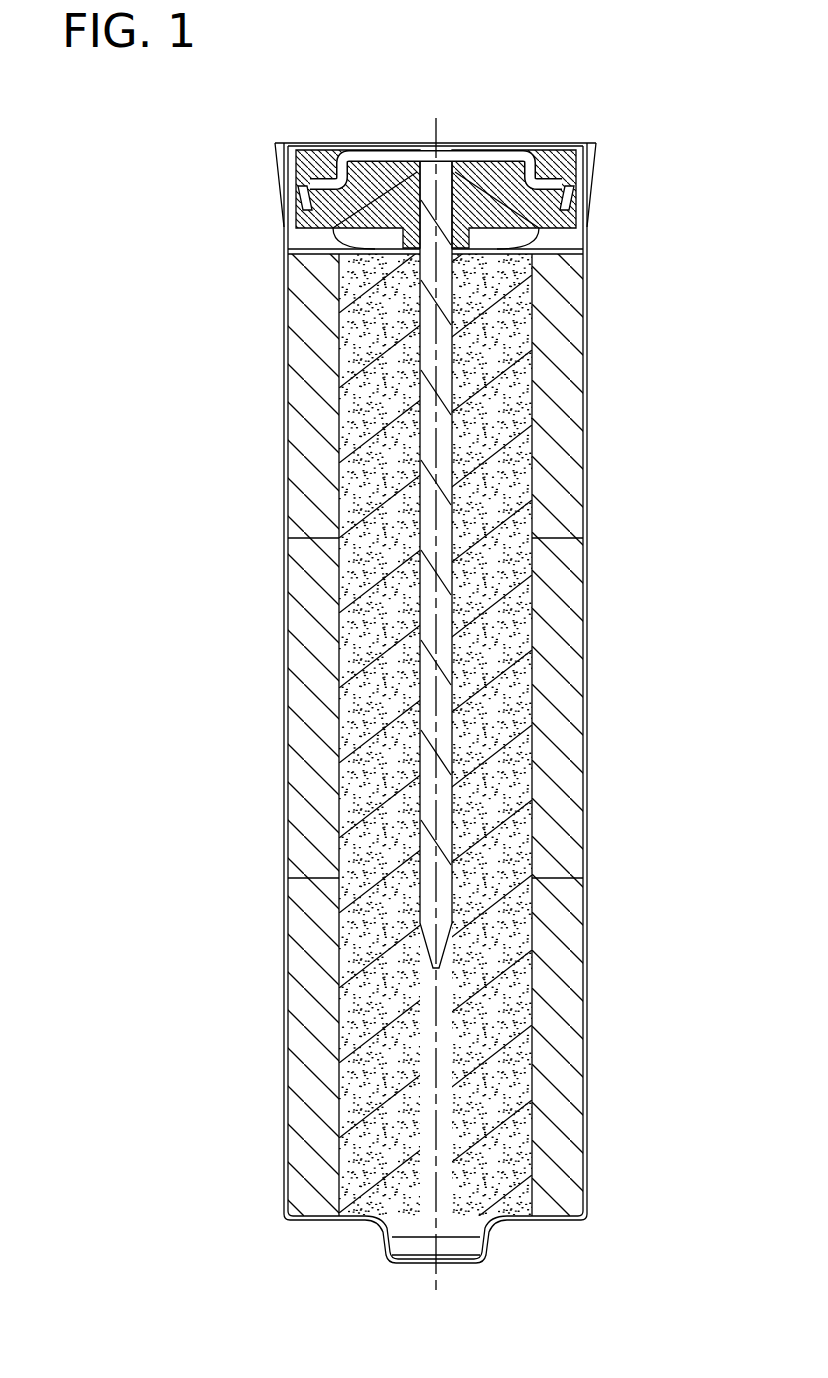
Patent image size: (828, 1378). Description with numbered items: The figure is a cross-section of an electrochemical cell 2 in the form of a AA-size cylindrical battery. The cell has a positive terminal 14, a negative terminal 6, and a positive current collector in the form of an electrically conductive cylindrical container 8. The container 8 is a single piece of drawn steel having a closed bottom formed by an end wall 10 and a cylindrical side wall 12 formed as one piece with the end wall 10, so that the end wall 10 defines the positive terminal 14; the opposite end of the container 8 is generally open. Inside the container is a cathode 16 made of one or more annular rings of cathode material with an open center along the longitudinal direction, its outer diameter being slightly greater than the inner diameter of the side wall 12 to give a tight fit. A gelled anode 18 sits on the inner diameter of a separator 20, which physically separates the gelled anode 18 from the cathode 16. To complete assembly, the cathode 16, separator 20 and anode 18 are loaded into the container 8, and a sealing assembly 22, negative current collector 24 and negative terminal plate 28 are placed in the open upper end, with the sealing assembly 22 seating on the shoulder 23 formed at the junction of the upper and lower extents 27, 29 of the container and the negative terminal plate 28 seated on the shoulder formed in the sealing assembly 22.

The electrochemical cell 2 is at (168, 212).
The negative terminal 6 is at (428, 142).
The electrically conductive cylindrical container 8 is at (590, 976).
The end wall 10 is at (562, 1219).
The cylindrical side wall 12 is at (285, 905).
The positive terminal 14 is at (358, 1222).
The cathode 16 is at (557, 1148).
The gelled anode 18 is at (503, 1088).
The separator 20 is at (533, 798).
The sealing assembly 22 is at (520, 152).
The shoulder 23 is at (282, 233).
The negative current collector 24 is at (440, 528).
The upper extent 27 is at (276, 178).
The negative terminal plate 28 is at (390, 150).
The lower extent 29 is at (285, 508).